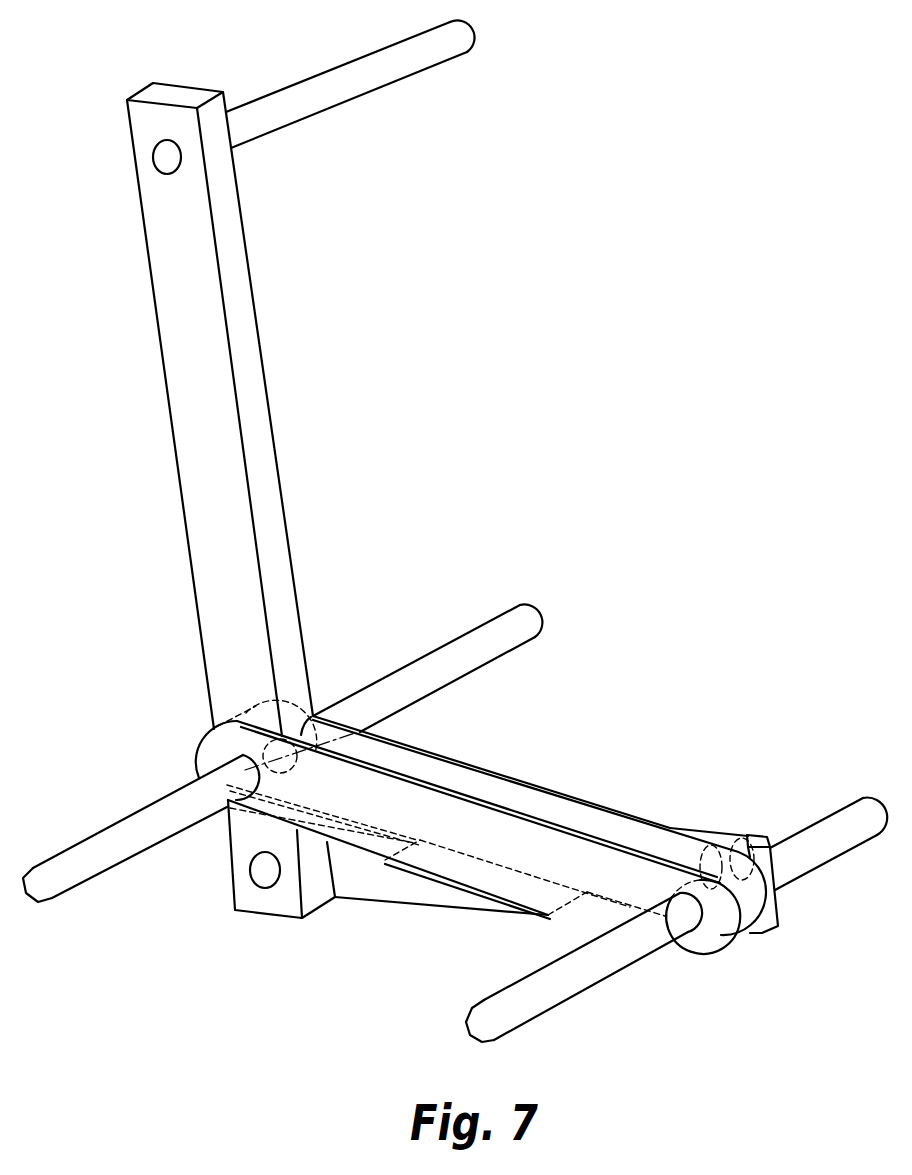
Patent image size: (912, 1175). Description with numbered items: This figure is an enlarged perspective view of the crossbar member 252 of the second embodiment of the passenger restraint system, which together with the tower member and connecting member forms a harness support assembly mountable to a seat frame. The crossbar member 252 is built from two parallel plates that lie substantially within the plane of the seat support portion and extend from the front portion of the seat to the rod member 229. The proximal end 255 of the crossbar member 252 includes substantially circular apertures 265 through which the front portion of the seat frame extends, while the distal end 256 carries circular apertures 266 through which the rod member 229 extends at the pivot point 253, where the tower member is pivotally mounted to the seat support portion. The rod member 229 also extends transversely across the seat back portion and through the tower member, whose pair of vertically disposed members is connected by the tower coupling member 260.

The rod member 229 is at (108, 845).
The crossbar member 252 is at (490, 770).
The pivot point 253 is at (303, 728).
The proximal end 255 is at (738, 930).
The distal end 256 is at (197, 755).
The tower coupling member 260 is at (343, 84).
The circular apertures 265 is at (685, 917).
The circular apertures 266 is at (243, 770).